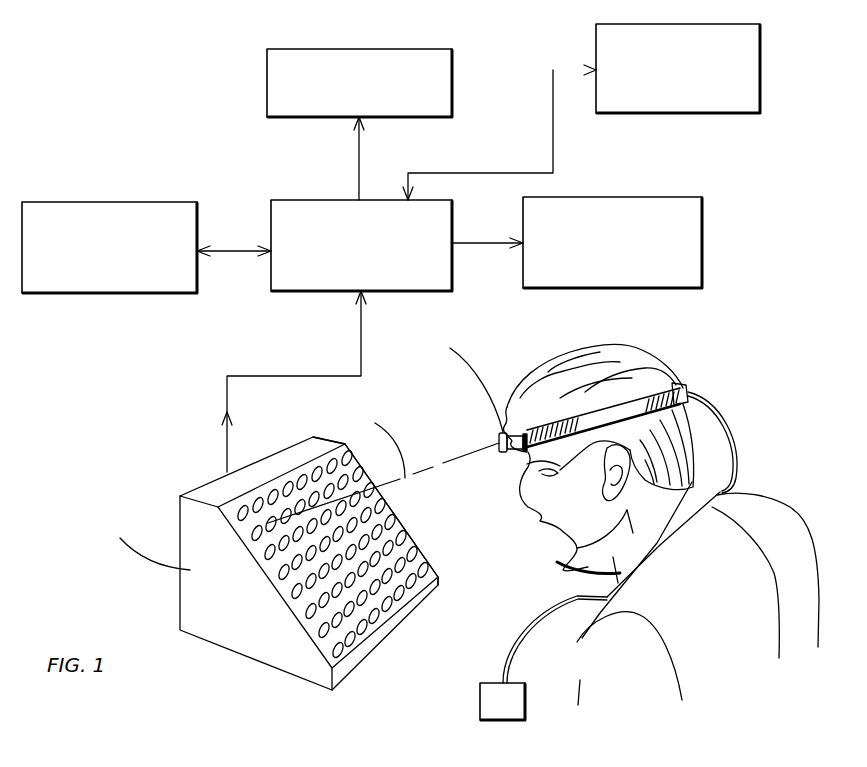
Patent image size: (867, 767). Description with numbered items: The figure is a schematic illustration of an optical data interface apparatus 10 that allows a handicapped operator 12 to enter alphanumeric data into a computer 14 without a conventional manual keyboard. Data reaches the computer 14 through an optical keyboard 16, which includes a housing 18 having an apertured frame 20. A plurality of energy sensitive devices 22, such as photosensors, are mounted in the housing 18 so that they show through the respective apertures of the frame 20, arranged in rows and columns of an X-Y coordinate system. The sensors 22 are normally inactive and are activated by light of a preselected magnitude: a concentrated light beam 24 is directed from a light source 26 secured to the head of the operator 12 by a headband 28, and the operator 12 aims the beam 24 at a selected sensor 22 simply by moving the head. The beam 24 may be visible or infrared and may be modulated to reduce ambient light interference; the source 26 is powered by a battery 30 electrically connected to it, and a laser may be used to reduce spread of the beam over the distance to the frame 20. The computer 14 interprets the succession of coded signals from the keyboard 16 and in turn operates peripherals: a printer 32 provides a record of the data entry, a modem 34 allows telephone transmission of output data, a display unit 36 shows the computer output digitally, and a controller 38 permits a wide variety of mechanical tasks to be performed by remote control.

The optical data interface apparatus 10 is at (170, 101).
The handicapped operator 12 is at (762, 493).
The computer 14 is at (303, 293).
The optical keyboard 16 is at (178, 598).
The housing 18 is at (400, 617).
The apertured frame 20 is at (410, 532).
The energy sensitive devices 22 is at (368, 625).
The light beam 24 is at (460, 461).
The light source 26 is at (499, 441).
The headband 28 is at (643, 380).
The battery 30 is at (480, 701).
The printer 32 is at (702, 230).
The modem 34 is at (140, 293).
The display unit 36 is at (267, 92).
The controller 38 is at (708, 113).